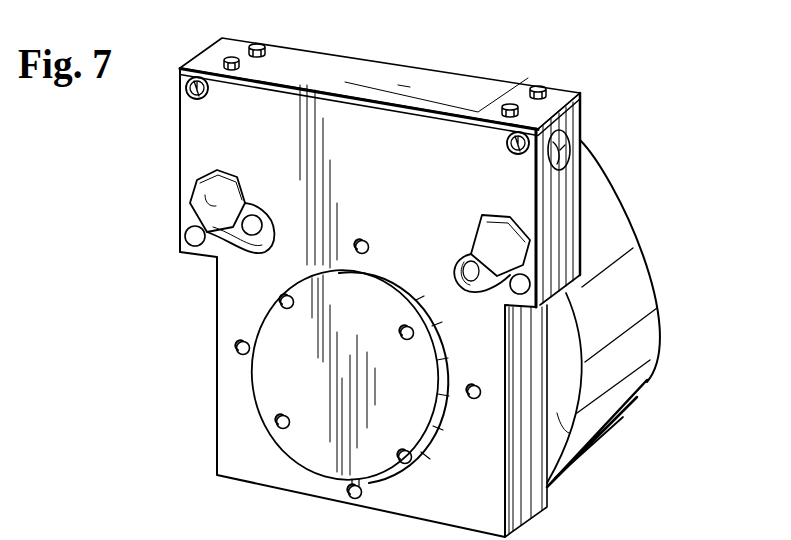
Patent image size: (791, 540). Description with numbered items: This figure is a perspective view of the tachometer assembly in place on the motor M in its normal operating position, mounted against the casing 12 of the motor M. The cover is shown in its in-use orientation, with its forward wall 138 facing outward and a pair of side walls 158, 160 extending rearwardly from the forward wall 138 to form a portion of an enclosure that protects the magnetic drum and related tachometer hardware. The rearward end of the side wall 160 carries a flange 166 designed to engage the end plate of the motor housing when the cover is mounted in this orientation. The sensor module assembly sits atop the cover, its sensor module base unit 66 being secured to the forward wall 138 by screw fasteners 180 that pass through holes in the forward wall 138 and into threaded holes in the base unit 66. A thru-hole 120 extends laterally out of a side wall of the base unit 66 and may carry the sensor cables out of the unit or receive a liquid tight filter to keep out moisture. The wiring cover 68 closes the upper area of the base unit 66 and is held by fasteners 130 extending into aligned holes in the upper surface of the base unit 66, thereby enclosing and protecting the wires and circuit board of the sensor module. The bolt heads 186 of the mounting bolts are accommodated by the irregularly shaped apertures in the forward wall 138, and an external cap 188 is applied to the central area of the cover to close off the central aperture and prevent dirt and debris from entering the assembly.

The casing 12 is at (609, 225).
The sensor module base unit 66 is at (581, 122).
The wiring cover 68 is at (335, 70).
The thru-hole 120 is at (570, 140).
The fasteners 130 is at (258, 42).
The forward wall 138 is at (390, 126).
The side wall 158 is at (215, 433).
The side wall 160 is at (523, 495).
The flange 166 is at (593, 443).
The fasteners 180 is at (186, 94).
The bolt heads 186 is at (195, 213).
The external cap 188 is at (378, 318).
The motor M is at (664, 287).